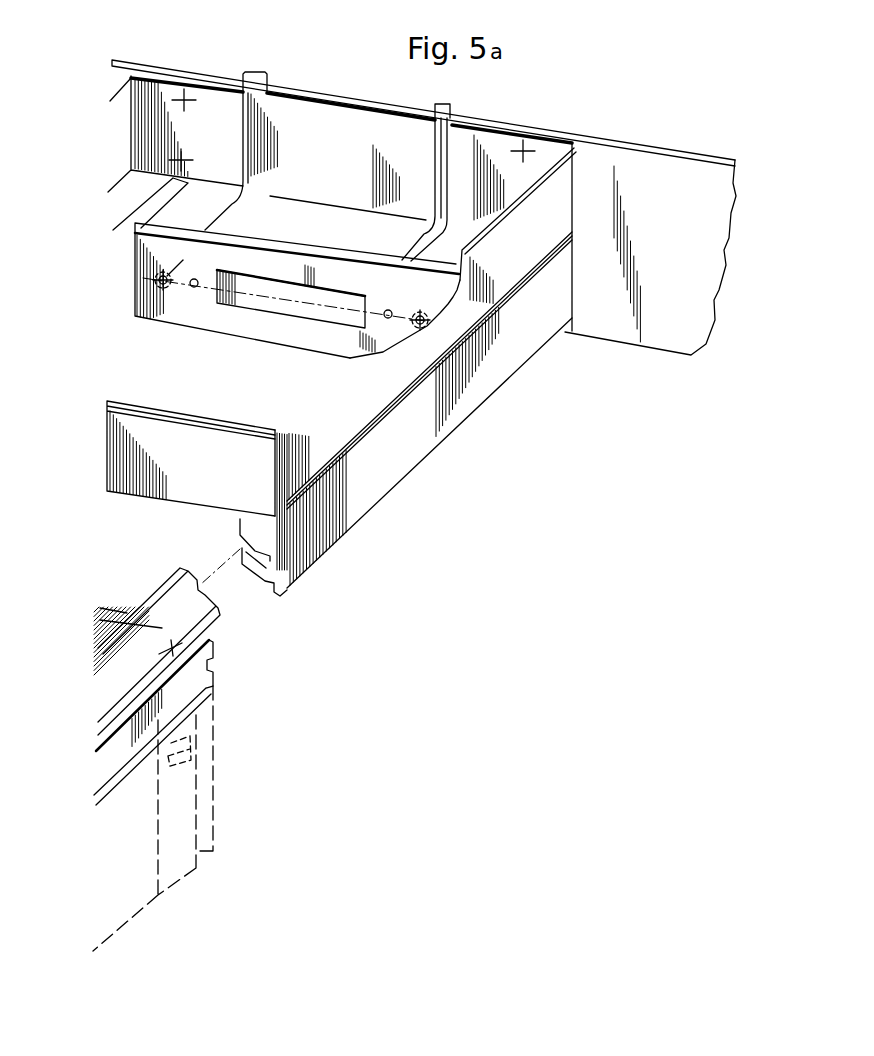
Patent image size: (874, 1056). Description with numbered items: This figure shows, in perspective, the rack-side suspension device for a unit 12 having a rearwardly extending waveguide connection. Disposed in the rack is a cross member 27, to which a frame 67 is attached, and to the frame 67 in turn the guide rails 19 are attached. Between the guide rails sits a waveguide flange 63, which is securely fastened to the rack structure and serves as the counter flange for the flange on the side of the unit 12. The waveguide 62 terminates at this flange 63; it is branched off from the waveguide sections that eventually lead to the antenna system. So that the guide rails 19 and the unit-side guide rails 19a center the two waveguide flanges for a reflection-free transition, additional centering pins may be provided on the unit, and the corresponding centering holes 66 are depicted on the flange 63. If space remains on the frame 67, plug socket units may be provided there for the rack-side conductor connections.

The waveguide 62 is at (412, 135).
The cross member 27 is at (690, 216).
The frame 67 is at (449, 300).
The centering holes 66 is at (383, 311).
The waveguide flange 63 is at (185, 305).
The guide rails 19 is at (302, 553).
The guide rails 19a is at (189, 662).
The unit 12 is at (190, 797).